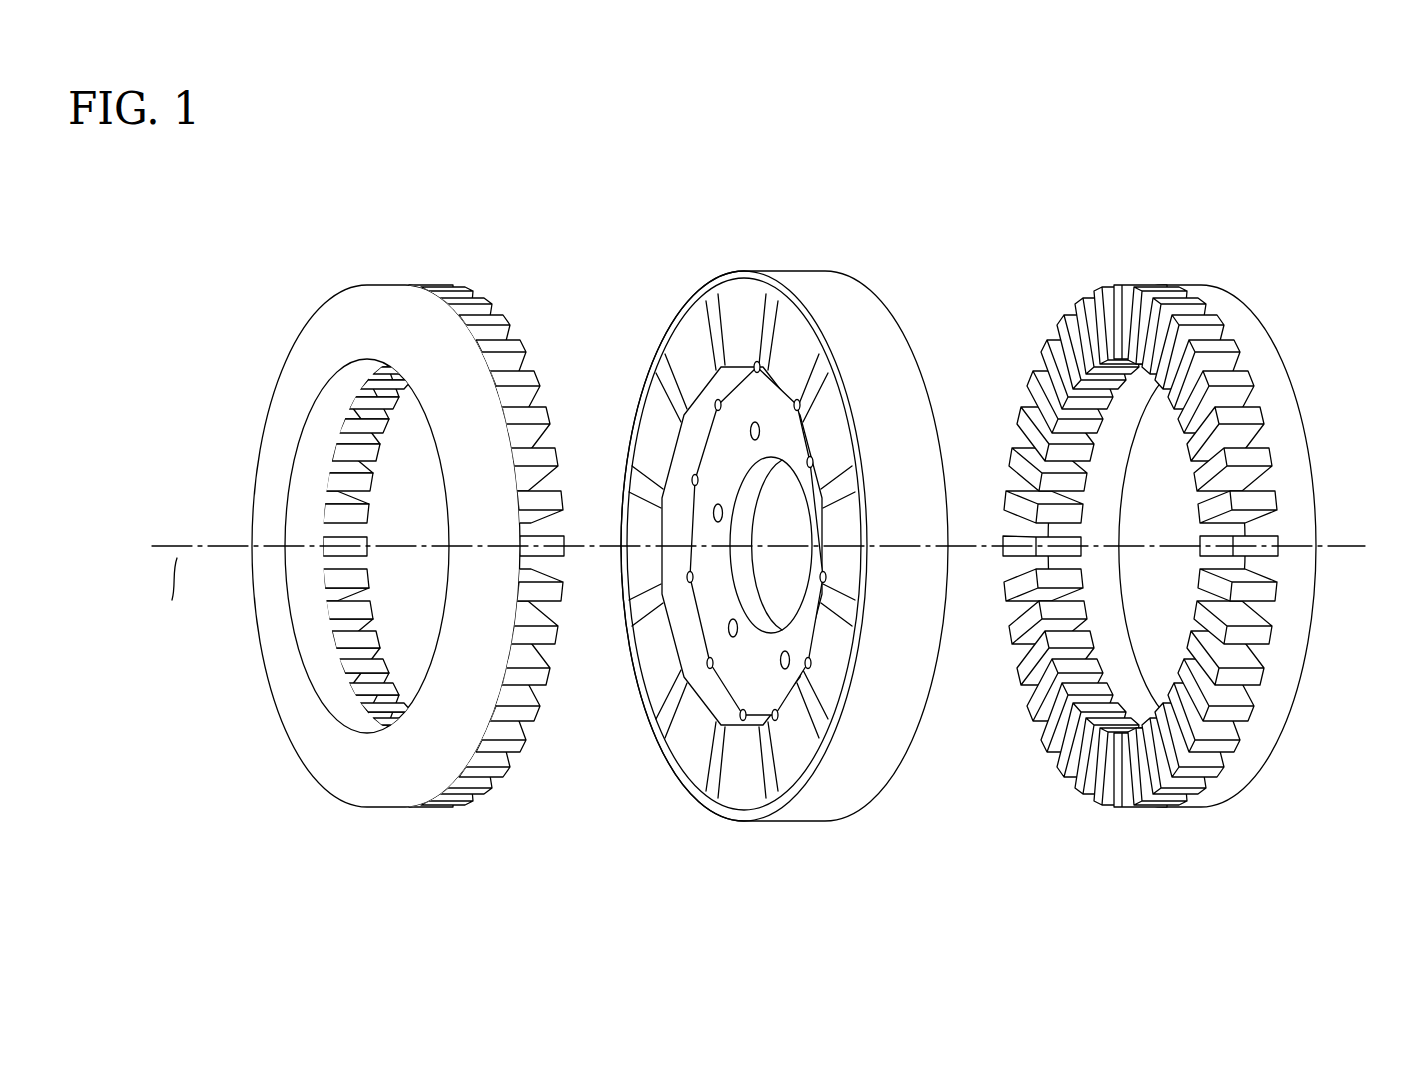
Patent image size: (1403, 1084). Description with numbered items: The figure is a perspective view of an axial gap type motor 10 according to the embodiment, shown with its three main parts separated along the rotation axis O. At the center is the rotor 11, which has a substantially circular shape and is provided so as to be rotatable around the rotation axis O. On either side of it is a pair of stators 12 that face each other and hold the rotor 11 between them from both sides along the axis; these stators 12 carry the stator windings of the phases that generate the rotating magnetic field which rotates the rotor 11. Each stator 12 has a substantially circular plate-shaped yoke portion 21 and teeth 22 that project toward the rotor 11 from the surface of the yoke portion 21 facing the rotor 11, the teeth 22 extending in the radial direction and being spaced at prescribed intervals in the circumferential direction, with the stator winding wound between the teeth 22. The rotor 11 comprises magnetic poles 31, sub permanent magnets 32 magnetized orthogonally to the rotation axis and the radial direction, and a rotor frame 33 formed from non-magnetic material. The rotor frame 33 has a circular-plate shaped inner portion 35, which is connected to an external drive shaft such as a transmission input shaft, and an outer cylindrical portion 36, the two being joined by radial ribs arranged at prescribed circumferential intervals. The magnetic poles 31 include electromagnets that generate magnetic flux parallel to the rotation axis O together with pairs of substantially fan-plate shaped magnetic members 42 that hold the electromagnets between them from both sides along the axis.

The axial gap type motor 10 is at (1233, 184).
The rotor 11 is at (770, 235).
The stators 12 is at (413, 248).
The yoke portion 21 is at (413, 804).
The teeth 22 is at (513, 760).
The magnetic poles 31 is at (842, 401).
The sub permanent magnets 32 is at (817, 372).
The rotor frame 33 is at (938, 369).
The inner portion 35 is at (740, 686).
The outer cylindrical portion 36 is at (829, 802).
The magnetic members 42 is at (792, 350).